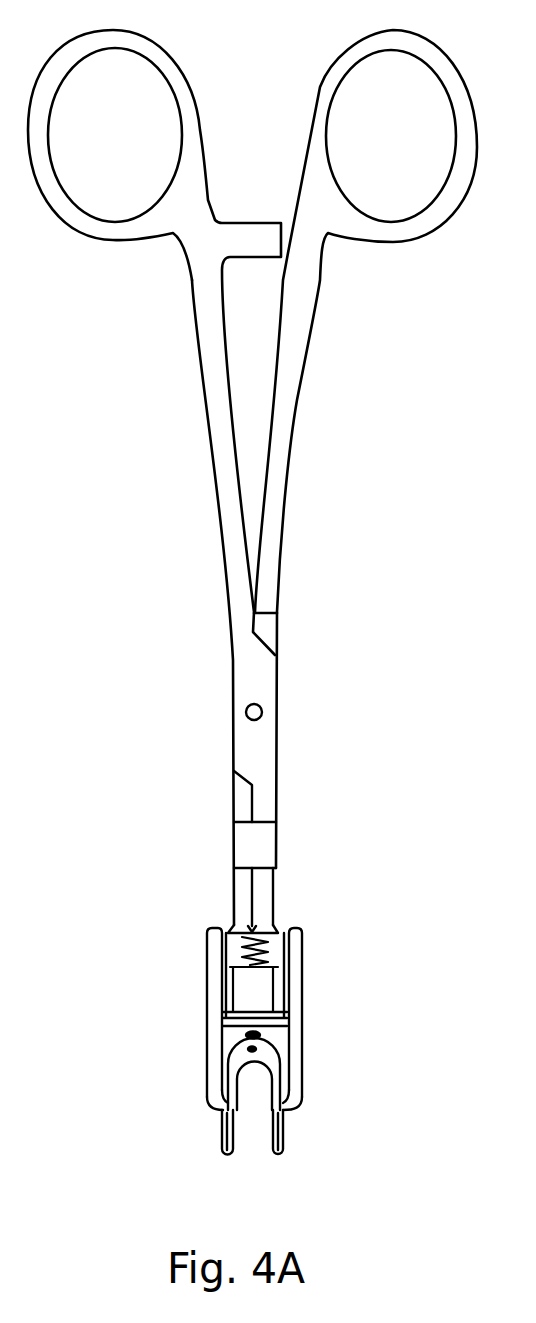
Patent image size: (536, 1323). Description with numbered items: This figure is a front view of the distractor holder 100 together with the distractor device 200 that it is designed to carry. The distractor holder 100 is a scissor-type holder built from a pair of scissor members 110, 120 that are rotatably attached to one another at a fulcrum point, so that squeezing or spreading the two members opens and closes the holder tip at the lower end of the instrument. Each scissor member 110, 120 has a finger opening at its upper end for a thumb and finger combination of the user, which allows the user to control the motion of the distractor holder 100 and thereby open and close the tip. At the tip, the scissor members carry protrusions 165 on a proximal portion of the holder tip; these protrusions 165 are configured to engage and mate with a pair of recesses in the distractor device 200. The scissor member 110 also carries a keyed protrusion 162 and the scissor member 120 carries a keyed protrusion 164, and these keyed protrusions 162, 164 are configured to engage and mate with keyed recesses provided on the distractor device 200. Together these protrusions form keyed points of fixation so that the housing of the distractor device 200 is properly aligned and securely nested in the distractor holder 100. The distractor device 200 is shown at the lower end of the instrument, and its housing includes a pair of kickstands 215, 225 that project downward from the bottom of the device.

The distractor holder 100 is at (252, 600).
The scissor member 110 is at (303, 335).
The scissor member 120 is at (213, 299).
The protrusions 165 is at (207, 988).
The distractor device 200 is at (265, 982).
The keyed protrusion 164 is at (250, 1084).
The keyed protrusion 162 is at (207, 1090).
The kickstand 215 is at (220, 1148).
The kickstand 225 is at (283, 1152).